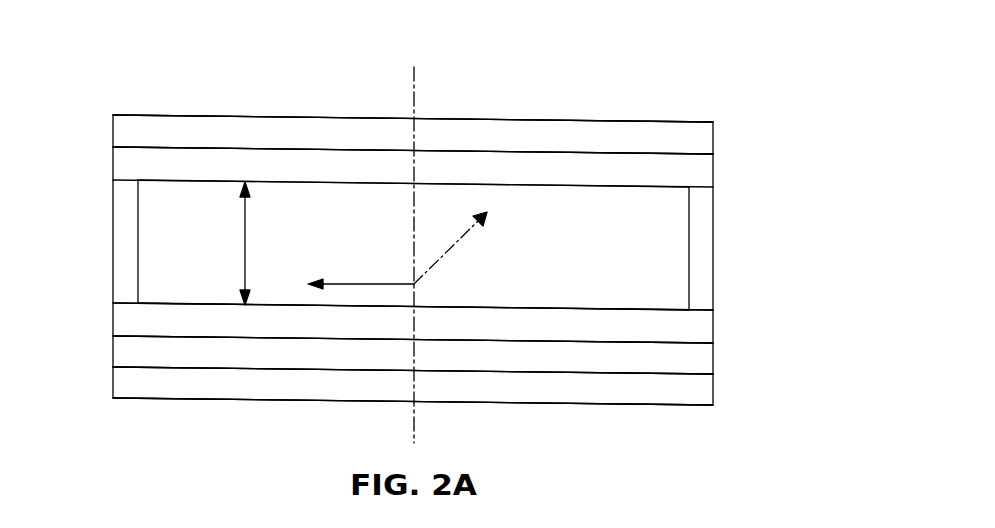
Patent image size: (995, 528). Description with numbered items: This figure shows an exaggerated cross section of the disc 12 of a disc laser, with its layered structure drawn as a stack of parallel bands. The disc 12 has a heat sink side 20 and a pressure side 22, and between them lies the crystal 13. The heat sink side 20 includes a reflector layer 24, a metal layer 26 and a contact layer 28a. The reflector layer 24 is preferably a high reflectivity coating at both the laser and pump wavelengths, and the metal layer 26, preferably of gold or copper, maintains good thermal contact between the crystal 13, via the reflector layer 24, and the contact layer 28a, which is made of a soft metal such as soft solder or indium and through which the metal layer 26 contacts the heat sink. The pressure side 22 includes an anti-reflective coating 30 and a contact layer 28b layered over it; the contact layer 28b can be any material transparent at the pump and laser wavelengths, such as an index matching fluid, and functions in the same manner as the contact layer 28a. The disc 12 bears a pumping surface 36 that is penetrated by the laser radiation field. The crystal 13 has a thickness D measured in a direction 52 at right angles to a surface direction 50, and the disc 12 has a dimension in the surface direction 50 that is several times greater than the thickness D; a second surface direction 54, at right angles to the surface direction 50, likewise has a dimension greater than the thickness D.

The disc 12 is at (552, 88).
The crystal 13 is at (637, 267).
The heat sink side 20 is at (97, 398).
The pressure side 22 is at (97, 180).
The reflector layer 24 is at (713, 320).
The metal layer 26 is at (713, 357).
The contact layer 28a is at (713, 395).
The contact layer 28b is at (713, 133).
The anti-reflective coating 30 is at (113, 243).
The pumping surface 36 is at (625, 150).
The surface direction 50 is at (388, 283).
The direction 52 is at (246, 262).
The second surface direction 54 is at (448, 249).
The thickness D is at (158, 181).